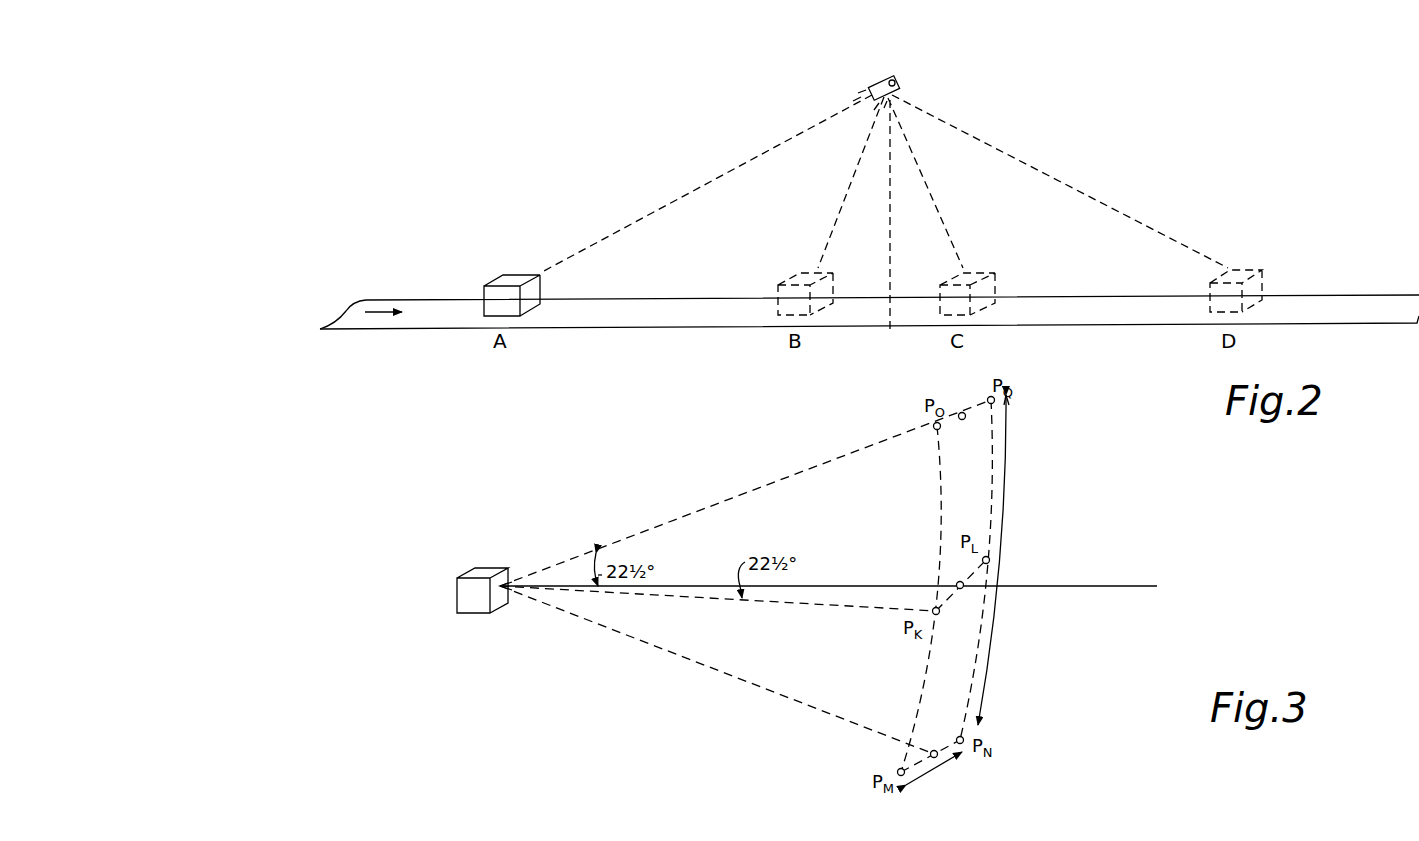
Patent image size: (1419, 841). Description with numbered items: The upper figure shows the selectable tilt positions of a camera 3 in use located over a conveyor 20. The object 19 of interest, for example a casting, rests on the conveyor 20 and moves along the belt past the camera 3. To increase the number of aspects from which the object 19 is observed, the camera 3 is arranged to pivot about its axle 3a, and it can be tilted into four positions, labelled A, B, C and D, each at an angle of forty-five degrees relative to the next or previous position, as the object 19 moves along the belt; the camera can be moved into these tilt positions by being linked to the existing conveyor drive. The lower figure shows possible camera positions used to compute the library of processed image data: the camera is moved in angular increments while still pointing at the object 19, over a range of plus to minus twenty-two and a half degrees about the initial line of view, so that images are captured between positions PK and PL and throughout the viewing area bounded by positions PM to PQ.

In FIG. 2, the camera 3 is at (883, 77).
In FIG. 2, the axle 3a is at (897, 82).
In FIG. 2, the object 19 is at (538, 291).
In FIG. 3, the object 19 is at (484, 570).
In FIG. 2, the conveyor 20 is at (1378, 300).